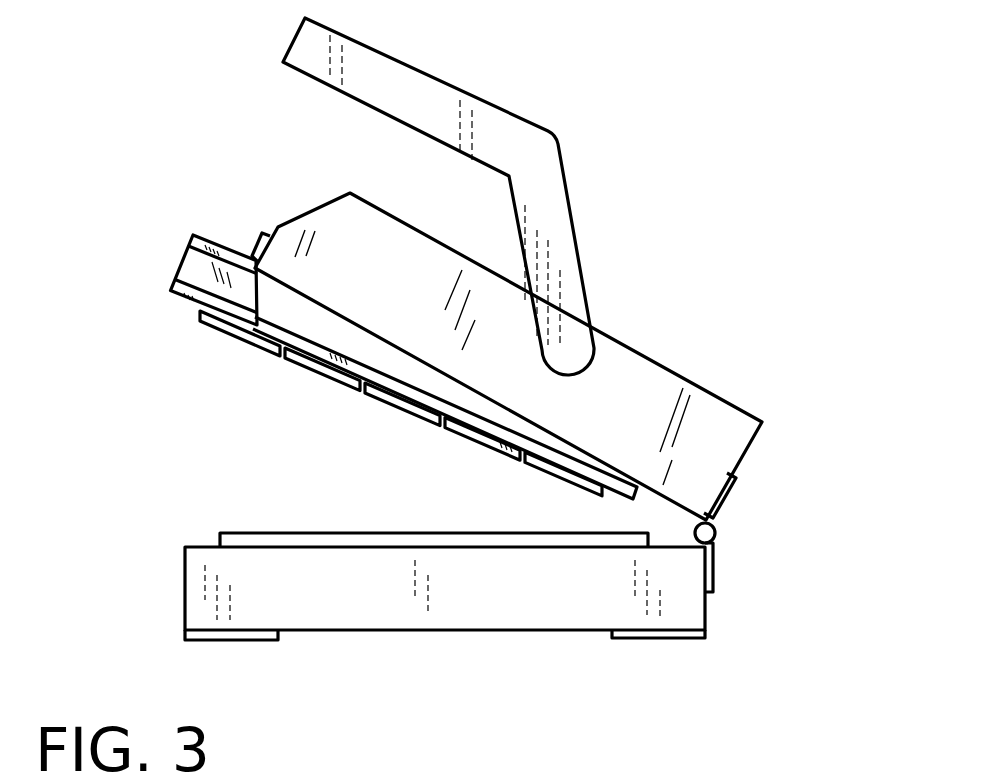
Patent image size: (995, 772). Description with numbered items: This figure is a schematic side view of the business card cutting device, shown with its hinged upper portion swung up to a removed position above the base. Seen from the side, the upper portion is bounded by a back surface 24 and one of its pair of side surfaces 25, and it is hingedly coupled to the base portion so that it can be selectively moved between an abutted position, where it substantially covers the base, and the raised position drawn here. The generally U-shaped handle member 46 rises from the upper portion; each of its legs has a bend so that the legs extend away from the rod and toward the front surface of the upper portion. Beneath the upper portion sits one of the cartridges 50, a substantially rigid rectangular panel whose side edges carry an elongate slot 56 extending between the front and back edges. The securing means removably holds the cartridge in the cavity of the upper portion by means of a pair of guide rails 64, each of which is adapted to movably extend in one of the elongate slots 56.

The back surface 24 is at (748, 448).
The side surfaces 25 is at (680, 428).
The handle member 46 is at (577, 135).
The cartridge 50 is at (190, 247).
The elongate slot 56 is at (187, 265).
The guide rails 64 is at (275, 310).